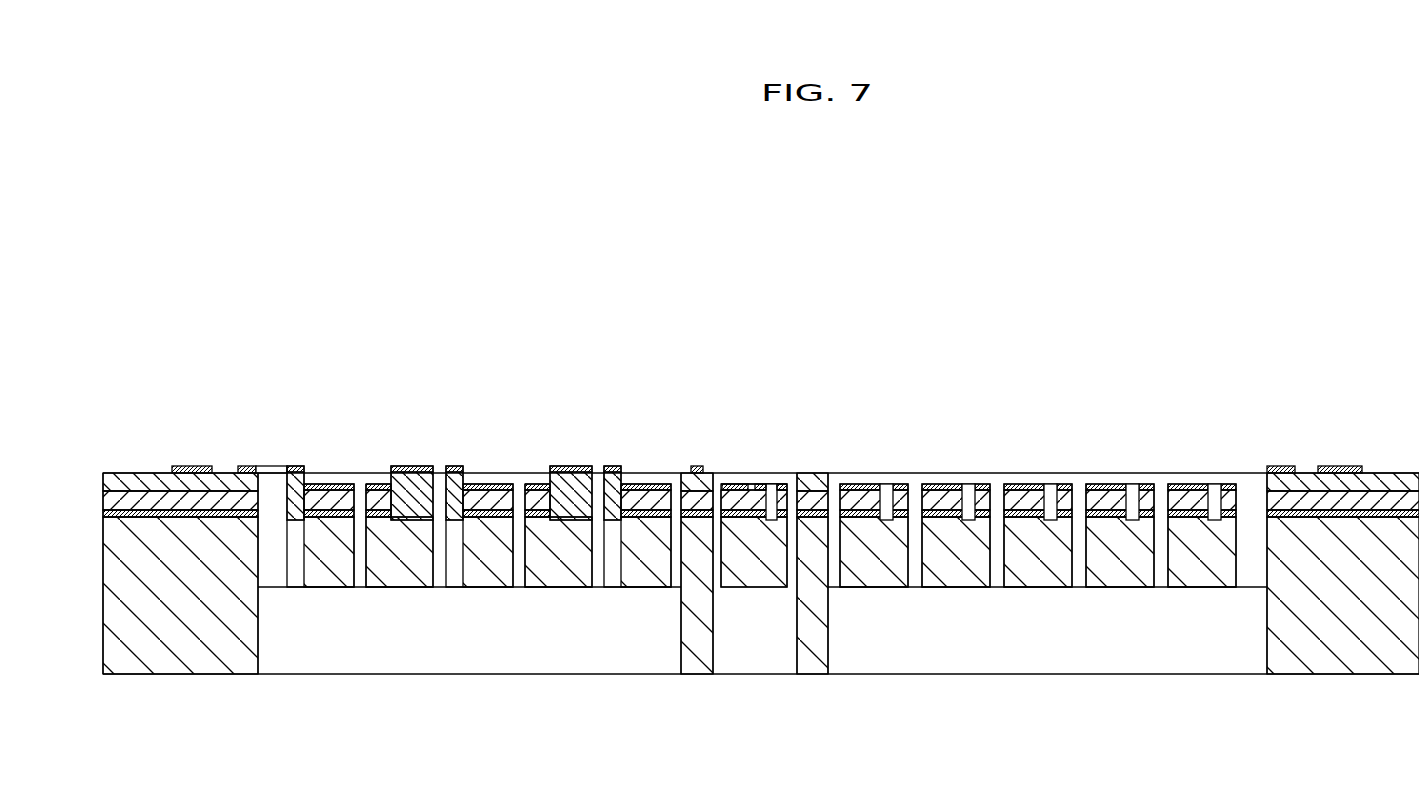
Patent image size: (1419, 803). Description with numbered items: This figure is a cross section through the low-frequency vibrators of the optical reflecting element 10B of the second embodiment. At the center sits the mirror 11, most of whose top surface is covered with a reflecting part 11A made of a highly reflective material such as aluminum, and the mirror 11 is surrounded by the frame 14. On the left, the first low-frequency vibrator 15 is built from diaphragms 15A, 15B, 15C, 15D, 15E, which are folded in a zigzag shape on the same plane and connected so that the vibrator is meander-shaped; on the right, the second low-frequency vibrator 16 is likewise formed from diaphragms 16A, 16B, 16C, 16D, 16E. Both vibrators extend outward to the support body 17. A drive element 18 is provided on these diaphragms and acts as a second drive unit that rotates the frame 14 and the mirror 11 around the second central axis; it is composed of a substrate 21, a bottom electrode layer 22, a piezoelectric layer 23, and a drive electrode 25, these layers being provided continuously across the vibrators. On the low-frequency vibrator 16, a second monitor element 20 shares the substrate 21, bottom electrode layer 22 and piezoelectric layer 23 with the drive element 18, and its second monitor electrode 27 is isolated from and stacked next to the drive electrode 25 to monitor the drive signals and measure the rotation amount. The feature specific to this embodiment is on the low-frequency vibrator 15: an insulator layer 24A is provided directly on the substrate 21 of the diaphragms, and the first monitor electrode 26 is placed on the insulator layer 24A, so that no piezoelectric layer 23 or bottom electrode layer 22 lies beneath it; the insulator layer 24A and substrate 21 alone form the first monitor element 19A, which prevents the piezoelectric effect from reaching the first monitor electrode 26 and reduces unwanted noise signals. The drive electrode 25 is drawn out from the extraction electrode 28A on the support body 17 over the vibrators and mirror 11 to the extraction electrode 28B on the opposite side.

The optical reflecting element 10B is at (1301, 272).
The mirror 11 is at (723, 682).
The reflecting part 11A is at (735, 475).
The frame 14 is at (680, 682).
The low-frequency vibrator 15 is at (469, 622).
The diaphragm 15A is at (671, 594).
The diaphragm 15B is at (592, 594).
The diaphragm 15C is at (446, 594).
The diaphragm 15D is at (366, 594).
The diaphragm 15E is at (287, 594).
The low-frequency vibrator 16 is at (1047, 622).
The diaphragm 16A is at (908, 594).
The diaphragm 16B is at (922, 594).
The diaphragm 16C is at (1004, 594).
The diaphragm 16D is at (1086, 594).
The diaphragm 16E is at (1168, 594).
The support body 17 is at (257, 681).
The drive element 18 is at (352, 472).
The first monitor element 19A is at (243, 331).
The second monitor element 20 is at (903, 478).
The substrate 21 is at (323, 532).
The bottom electrode layer 22 is at (1148, 478).
The piezoelectric layer 23 is at (1138, 478).
The insulator layer 24A is at (290, 466).
The drive electrode 25 is at (787, 475).
The first monitor electrode 26 is at (298, 466).
The second monitor electrode 27 is at (1285, 465).
The extraction electrode 28A is at (192, 465).
The extraction electrode 28B is at (1338, 465).